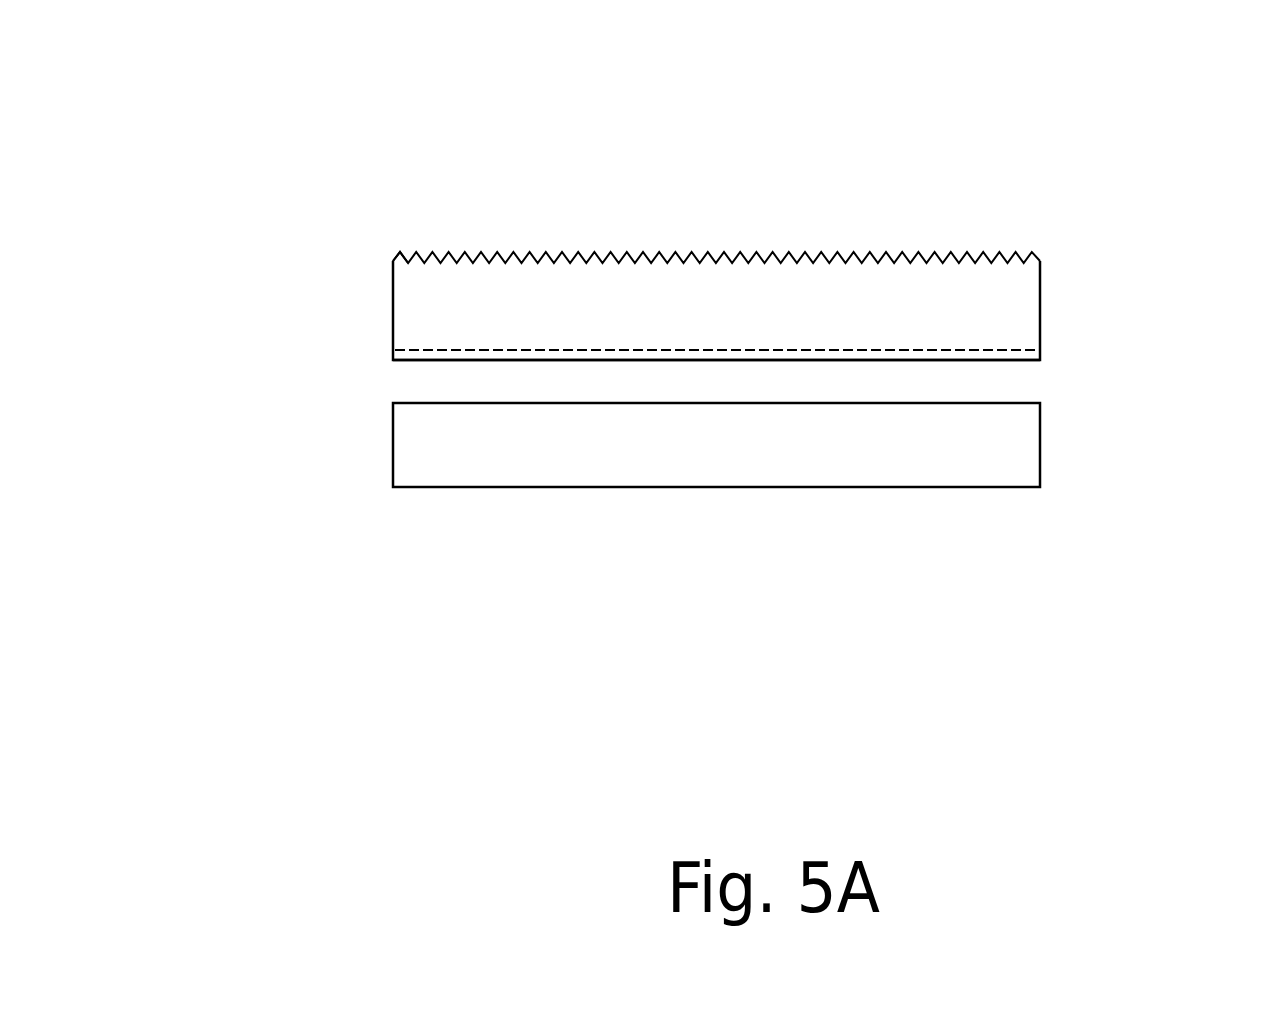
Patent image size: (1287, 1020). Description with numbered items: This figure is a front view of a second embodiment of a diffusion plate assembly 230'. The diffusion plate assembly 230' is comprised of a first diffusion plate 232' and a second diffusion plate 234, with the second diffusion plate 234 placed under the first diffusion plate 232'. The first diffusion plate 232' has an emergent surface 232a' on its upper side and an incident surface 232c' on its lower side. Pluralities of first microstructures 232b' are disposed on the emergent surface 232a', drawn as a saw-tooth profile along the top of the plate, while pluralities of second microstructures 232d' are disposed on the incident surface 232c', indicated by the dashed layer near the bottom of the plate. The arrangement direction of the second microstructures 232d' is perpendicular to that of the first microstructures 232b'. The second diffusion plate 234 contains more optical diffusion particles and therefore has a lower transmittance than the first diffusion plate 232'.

The diffusion plate assembly 230' is at (699, 355).
The first diffusion plate 232' is at (699, 255).
The emergent surface 232a' is at (606, 135).
The first microstructures 232b' is at (280, 243).
The incident surface 232c' is at (626, 431).
The second microstructures 232d' is at (588, 325).
The second diffusion plate 234 is at (1040, 447).